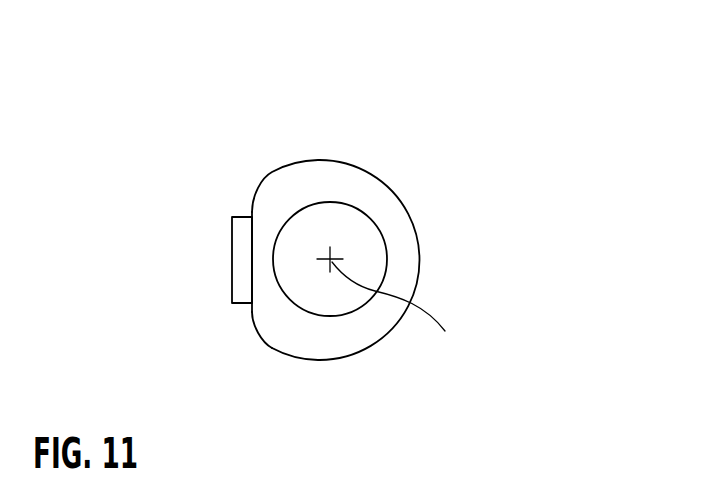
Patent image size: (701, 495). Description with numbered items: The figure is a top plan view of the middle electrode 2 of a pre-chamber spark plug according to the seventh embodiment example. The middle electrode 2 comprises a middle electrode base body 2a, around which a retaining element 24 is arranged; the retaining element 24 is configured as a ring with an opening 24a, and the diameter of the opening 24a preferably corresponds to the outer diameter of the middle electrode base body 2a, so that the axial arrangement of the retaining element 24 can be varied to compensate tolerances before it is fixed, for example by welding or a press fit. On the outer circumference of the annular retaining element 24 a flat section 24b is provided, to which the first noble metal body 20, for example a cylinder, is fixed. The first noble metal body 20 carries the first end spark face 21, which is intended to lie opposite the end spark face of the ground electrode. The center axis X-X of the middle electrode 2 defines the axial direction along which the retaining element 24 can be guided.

The middle electrode 2 is at (276, 135).
The middle electrode base body 2a is at (327, 288).
The first noble metal body 20 is at (243, 262).
The first end spark face 21 is at (221, 240).
The retaining element 24 is at (402, 258).
The opening 24a is at (347, 212).
The flat section 24b is at (252, 288).